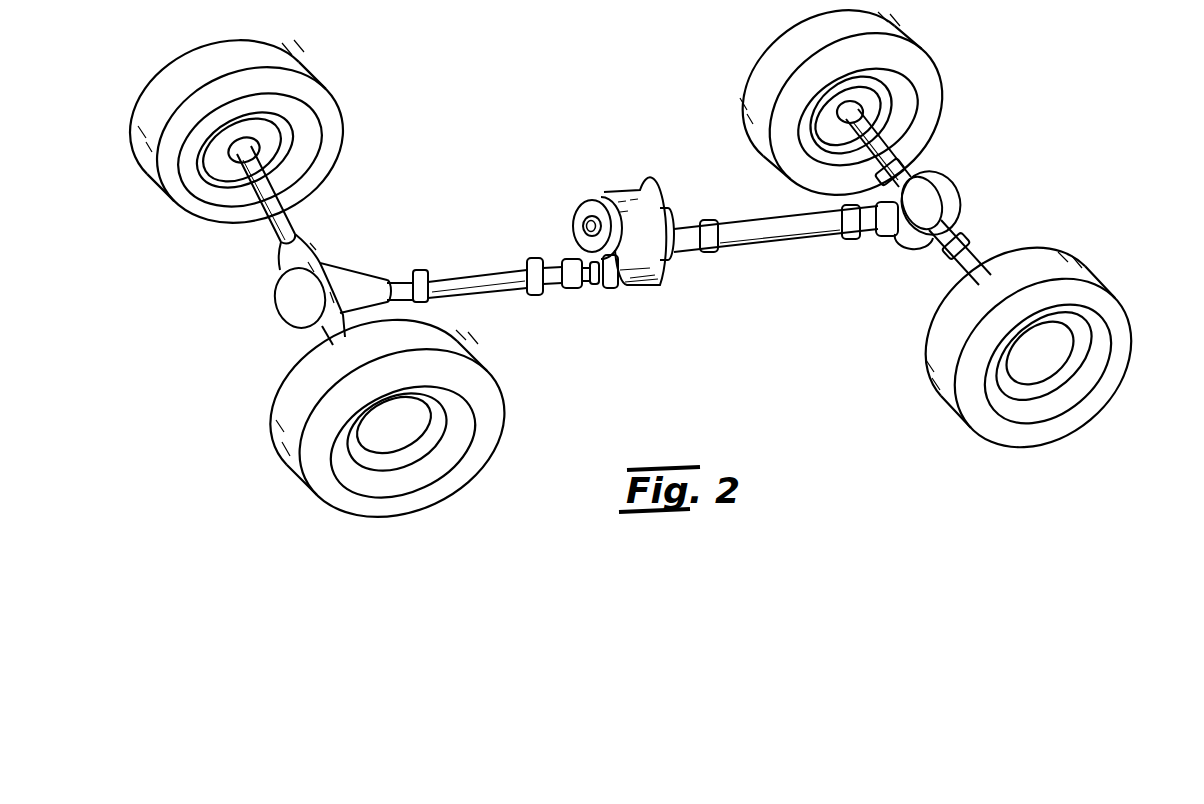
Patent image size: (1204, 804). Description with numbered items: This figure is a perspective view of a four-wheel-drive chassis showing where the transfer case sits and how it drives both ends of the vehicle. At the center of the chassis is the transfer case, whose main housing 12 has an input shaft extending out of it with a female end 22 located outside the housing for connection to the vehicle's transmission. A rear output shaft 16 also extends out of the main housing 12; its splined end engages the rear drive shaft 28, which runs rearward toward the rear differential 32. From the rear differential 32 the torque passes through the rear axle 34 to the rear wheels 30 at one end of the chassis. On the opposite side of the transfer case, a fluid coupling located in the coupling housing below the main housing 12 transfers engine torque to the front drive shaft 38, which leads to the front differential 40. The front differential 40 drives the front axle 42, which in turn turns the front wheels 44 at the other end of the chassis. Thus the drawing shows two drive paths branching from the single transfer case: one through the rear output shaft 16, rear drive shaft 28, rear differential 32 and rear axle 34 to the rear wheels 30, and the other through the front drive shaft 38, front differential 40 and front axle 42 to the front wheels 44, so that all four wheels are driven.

The main housing 12 is at (625, 182).
The rear output shaft 16 is at (689, 252).
The female end 22 is at (583, 228).
The rear drive shaft 28 is at (709, 220).
The rear wheels 30 is at (915, 33).
The rear differential 32 is at (948, 199).
The rear axle 34 is at (910, 145).
The front drive shaft 38 is at (476, 272).
The front differential 40 is at (282, 308).
The front axle 42 is at (282, 217).
The front wheels 44 is at (306, 60).